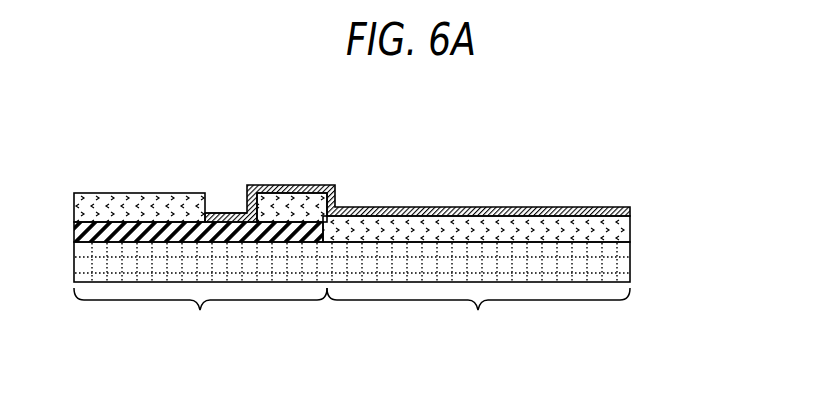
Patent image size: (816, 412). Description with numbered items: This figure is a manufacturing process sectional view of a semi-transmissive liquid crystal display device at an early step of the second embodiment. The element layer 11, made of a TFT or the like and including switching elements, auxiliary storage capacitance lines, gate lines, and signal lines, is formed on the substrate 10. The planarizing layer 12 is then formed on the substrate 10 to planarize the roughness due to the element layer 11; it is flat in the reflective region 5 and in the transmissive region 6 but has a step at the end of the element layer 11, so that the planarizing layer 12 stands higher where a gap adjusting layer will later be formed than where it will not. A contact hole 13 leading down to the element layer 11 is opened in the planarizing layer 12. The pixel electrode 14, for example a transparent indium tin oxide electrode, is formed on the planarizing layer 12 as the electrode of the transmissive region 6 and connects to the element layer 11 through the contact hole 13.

The reflective region 5 is at (200, 314).
The transmissive region 6 is at (478, 314).
The substrate 10 is at (610, 264).
The element layer 11 is at (302, 221).
The planarizing layer 12 is at (631, 218).
The contact hole 13 is at (221, 182).
The pixel electrode 14 is at (463, 208).